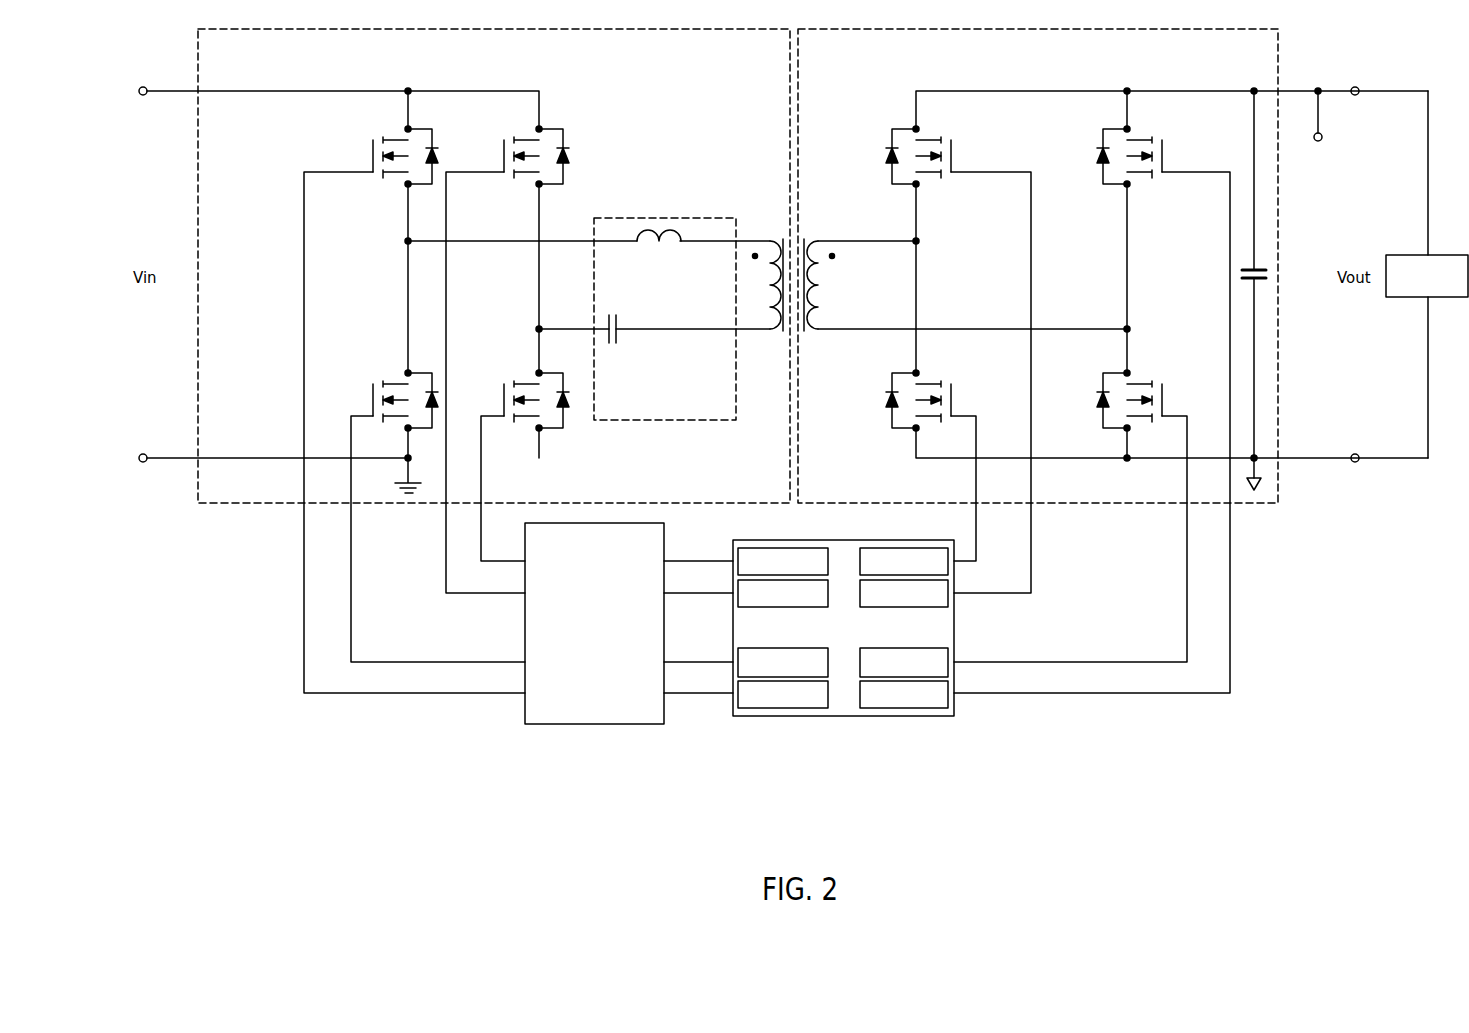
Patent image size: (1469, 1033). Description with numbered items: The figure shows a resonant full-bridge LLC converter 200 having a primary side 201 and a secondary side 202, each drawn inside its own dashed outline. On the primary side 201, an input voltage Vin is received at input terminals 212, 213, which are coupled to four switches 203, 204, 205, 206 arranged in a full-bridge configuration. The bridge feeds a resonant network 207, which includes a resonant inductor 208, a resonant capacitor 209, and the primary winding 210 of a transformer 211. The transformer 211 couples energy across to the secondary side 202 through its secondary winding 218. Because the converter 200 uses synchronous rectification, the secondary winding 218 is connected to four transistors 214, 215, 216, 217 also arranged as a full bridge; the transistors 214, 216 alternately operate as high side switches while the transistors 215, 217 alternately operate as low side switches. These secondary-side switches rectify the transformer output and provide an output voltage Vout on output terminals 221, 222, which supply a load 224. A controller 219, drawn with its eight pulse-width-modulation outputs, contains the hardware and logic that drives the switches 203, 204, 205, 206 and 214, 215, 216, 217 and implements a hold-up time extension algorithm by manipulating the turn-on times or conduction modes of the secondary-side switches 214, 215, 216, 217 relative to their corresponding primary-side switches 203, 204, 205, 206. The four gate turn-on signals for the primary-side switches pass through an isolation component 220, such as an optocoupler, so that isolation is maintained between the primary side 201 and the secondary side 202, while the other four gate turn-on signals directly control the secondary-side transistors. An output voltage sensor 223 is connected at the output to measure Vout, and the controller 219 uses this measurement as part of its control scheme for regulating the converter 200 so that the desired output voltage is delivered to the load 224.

The LLC converter 200 is at (181, 14).
The primary side 201 is at (198, 72).
The secondary side 202 is at (1278, 40).
The switch Q1 203 is at (372, 160).
The switch Q2 204 is at (373, 400).
The switch Q3 205 is at (504, 160).
The switch Q4 206 is at (504, 400).
The resonant network 207 is at (665, 291).
The resonant inductor 208 is at (680, 231).
The resonant capacitor 209 is at (618, 326).
The primary winding 210 is at (770, 241).
The transformer 211 is at (806, 281).
The input terminal 212 is at (141, 95).
The input terminal 213 is at (139, 456).
The transistor Q5 214 is at (953, 160).
The transistor Q6 215 is at (953, 407).
The transistor Q7 216 is at (1163, 160).
The transistor Q8 217 is at (1163, 407).
The secondary winding 218 is at (818, 241).
The controller 219 is at (843, 540).
The isolation component 220 is at (664, 545).
The output terminal 221 is at (1356, 87).
The output terminal 222 is at (1355, 462).
The output voltage sensor 223 is at (1322, 138).
The load 224 is at (1404, 255).